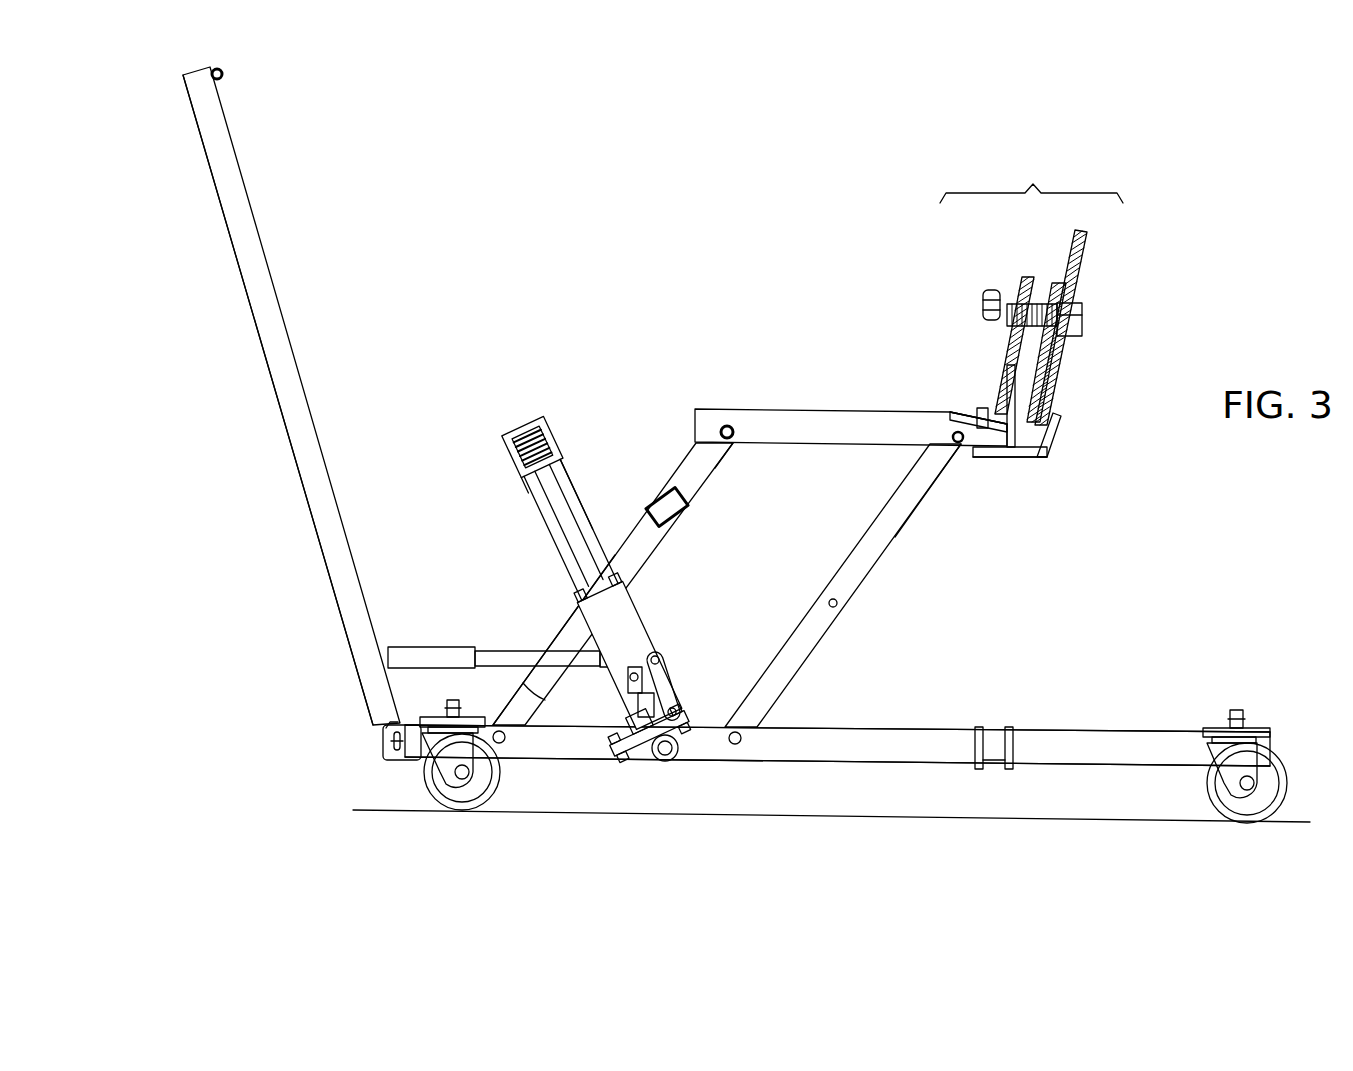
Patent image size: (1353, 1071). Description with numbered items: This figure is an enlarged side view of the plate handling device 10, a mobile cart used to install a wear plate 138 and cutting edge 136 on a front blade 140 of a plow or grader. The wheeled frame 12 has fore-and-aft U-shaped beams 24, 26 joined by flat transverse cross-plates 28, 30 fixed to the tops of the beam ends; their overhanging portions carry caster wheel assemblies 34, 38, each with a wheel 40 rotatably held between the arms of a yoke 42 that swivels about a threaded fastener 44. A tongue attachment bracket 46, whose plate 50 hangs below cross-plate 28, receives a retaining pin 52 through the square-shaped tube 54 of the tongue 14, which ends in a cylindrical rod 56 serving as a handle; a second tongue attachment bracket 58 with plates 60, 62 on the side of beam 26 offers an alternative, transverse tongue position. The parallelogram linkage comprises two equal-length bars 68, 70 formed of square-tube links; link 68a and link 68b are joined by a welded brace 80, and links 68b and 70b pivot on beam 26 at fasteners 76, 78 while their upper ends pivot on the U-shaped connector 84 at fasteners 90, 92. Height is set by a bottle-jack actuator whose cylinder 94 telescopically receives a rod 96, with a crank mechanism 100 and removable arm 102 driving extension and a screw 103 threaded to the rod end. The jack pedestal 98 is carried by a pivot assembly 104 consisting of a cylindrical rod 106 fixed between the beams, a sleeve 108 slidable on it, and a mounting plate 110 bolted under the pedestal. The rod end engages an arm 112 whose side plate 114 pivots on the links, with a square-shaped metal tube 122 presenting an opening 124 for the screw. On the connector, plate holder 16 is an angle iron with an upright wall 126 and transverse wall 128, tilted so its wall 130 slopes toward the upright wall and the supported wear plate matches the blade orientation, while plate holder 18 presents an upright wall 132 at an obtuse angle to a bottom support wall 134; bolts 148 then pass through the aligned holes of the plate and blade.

The plate handling device 10 is at (1100, 722).
The wheeled frame 12 is at (1118, 767).
The tongue 14 is at (312, 404).
The plate holder 16 is at (950, 412).
The plate holder 18 is at (1042, 457).
The U-shaped beam 24 is at (703, 750).
The U-shaped beam 26 is at (913, 767).
The cross-plate 28 is at (430, 717).
The cross-plate 30 is at (1255, 730).
The caster wheel assembly 34 is at (485, 808).
The caster wheel assembly 38 is at (1283, 797).
The wheel 40 is at (455, 797).
The yoke 42 is at (425, 738).
The threaded fastener 44 is at (462, 710).
The tongue attachment bracket 46 is at (375, 760).
The plate 50 is at (382, 745).
The retaining pin 52 is at (388, 728).
The square-shaped tube 54 is at (246, 203).
The cylindrical rod 56 is at (222, 72).
The second tongue attachment bracket 58 is at (985, 748).
The plate 60 is at (975, 758).
The plate 62 is at (1020, 750).
The bar 68 is at (670, 488).
The link 68a is at (648, 555).
The link 68b is at (716, 470).
The bar 70 is at (848, 604).
The link 70b is at (895, 537).
The fastener 76 is at (505, 745).
The fastener 78 is at (737, 745).
The brace 80 is at (683, 520).
The U-shaped connector 84 is at (820, 418).
The fastener 90 is at (725, 428).
The fastener 92 is at (940, 436).
The cylinder 94 is at (632, 617).
The rod 96 is at (563, 552).
The pedestal 98 is at (688, 705).
The crank mechanism 100 is at (662, 663).
The removable arm 102 is at (491, 648).
The screw 103 is at (553, 450).
The pivot assembly 104 is at (640, 760).
The cylindrical rod 106 is at (676, 762).
The sleeve 108 is at (682, 755).
The mounting plate 110 is at (638, 762).
The arm 112 is at (572, 487).
The side plate 114 is at (572, 514).
The square-shaped metal tube 122 is at (523, 438).
The opening 124 is at (536, 490).
The upright wall 126 is at (1022, 380).
The transverse wall 128 is at (962, 410).
The wall 130 is at (982, 408).
The upright wall 132 is at (1052, 440).
The bottom support wall 134 is at (1000, 455).
The cutting edge 136 is at (1060, 283).
The wear plate 138 is at (1027, 278).
The front blade 140 is at (1082, 238).
The bolt 148 is at (1082, 322).